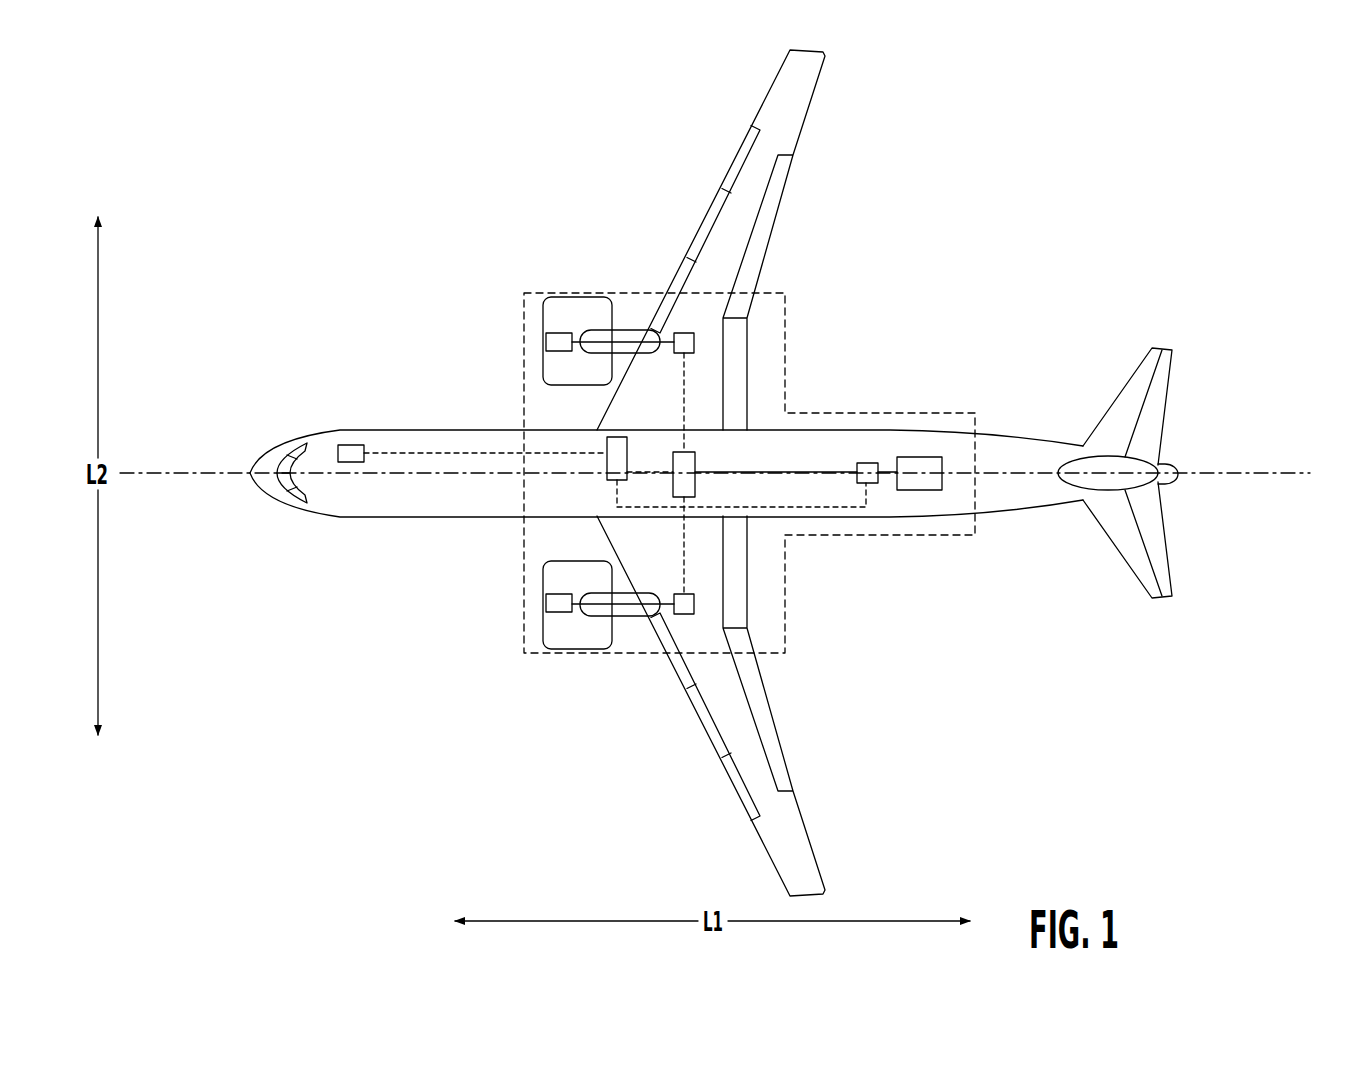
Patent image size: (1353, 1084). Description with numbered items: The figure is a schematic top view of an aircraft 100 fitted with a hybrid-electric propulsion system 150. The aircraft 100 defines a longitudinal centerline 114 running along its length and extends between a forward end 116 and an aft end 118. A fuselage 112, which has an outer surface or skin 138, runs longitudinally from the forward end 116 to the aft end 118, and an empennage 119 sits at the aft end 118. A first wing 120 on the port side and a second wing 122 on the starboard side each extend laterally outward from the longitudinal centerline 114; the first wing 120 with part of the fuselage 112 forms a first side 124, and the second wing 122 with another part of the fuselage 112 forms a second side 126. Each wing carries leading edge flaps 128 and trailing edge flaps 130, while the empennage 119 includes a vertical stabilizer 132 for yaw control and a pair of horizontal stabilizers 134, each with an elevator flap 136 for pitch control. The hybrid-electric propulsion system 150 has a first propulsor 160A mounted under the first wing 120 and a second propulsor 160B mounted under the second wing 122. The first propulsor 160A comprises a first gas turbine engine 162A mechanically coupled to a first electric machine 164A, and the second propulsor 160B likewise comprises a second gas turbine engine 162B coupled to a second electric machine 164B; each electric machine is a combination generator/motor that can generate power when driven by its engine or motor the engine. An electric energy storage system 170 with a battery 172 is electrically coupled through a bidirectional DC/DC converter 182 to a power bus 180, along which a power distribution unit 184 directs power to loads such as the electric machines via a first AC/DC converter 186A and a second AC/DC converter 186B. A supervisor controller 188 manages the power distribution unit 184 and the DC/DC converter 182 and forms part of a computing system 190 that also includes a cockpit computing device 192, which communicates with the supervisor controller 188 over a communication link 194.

The aircraft 100 is at (1007, 192).
The fuselage 112 is at (330, 505).
The longitudinal centerline 114 is at (172, 471).
The forward end 116 is at (237, 524).
The aft end 118 is at (1109, 599).
The empennage 119 is at (1189, 473).
The first wing 120 is at (726, 706).
The second wing 122 is at (803, 103).
The first side 124 is at (571, 691).
The second side 126 is at (508, 257).
The leading edge flaps 128 is at (702, 726).
The trailing edge flaps 130 is at (781, 737).
The vertical stabilizer 132 is at (1164, 484).
The horizontal stabilizers 134 is at (1127, 388).
The elevator flap 136 is at (1158, 400).
The outer surface or skin 138 is at (1021, 502).
The hybrid-electric propulsion system 150 is at (787, 363).
The first propulsor 160A is at (566, 630).
The second propulsor 160B is at (562, 297).
The first gas turbine engine 162A is at (546, 604).
The second gas turbine engine 162B is at (545, 331).
The first electric machine 164A is at (557, 580).
The second electric machine 164B is at (560, 353).
The electric energy storage system 170 is at (951, 461).
The battery 172 is at (921, 456).
The power bus 180 is at (801, 484).
The DC/DC converter 182 is at (866, 462).
The power distribution unit 184 is at (696, 487).
The first AC/DC converter 186A is at (695, 604).
The second AC/DC converter 186B is at (694, 334).
The supervisor controller 188 is at (606, 468).
The computing system 190 is at (460, 385).
The computing device 192 is at (347, 444).
The communication link 194 is at (440, 451).